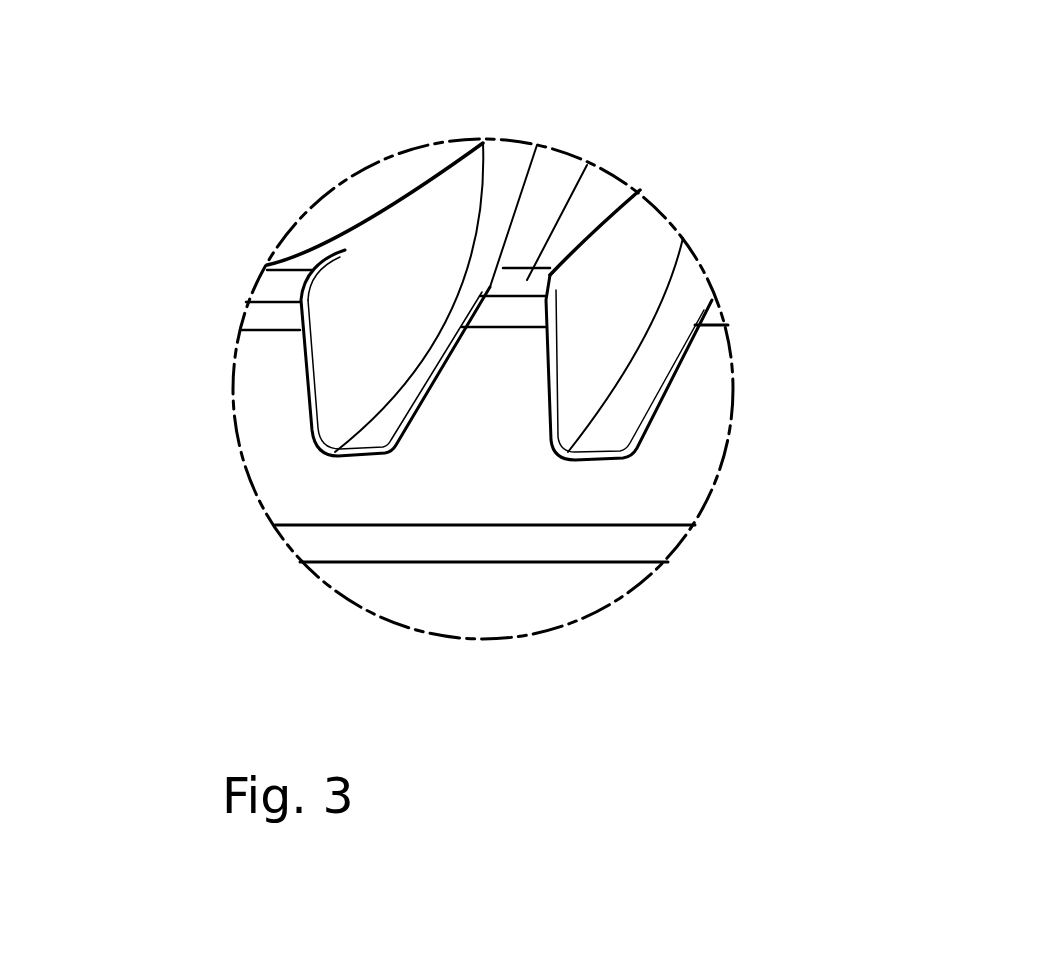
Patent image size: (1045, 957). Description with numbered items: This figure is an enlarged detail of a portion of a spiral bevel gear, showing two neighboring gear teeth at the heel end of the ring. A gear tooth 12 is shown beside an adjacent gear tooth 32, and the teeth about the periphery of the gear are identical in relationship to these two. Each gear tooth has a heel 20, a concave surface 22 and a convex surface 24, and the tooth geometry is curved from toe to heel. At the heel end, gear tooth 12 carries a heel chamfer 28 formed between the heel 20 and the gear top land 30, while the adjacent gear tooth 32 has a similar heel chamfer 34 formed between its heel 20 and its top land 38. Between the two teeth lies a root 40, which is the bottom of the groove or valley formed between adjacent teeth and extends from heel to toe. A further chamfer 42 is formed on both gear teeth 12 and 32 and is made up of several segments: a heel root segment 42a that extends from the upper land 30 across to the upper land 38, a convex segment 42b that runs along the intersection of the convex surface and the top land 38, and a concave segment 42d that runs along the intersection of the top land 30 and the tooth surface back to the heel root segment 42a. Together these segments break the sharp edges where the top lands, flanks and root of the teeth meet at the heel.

The gear tooth 12 is at (497, 387).
The heel 20 is at (282, 472).
The concave surface 22 is at (360, 326).
The convex surface 24 is at (530, 250).
The heel chamfer 28 is at (513, 285).
The gear top land 30 is at (597, 203).
The adjacent gear tooth 32 is at (262, 377).
The heel chamfer 34 is at (275, 291).
The top land 38 is at (380, 216).
The root 40 is at (373, 432).
The chamfer 42 is at (308, 387).
The heel root segment 42a is at (378, 455).
The convex segment 42b is at (350, 250).
The concave segment 42d is at (563, 203).